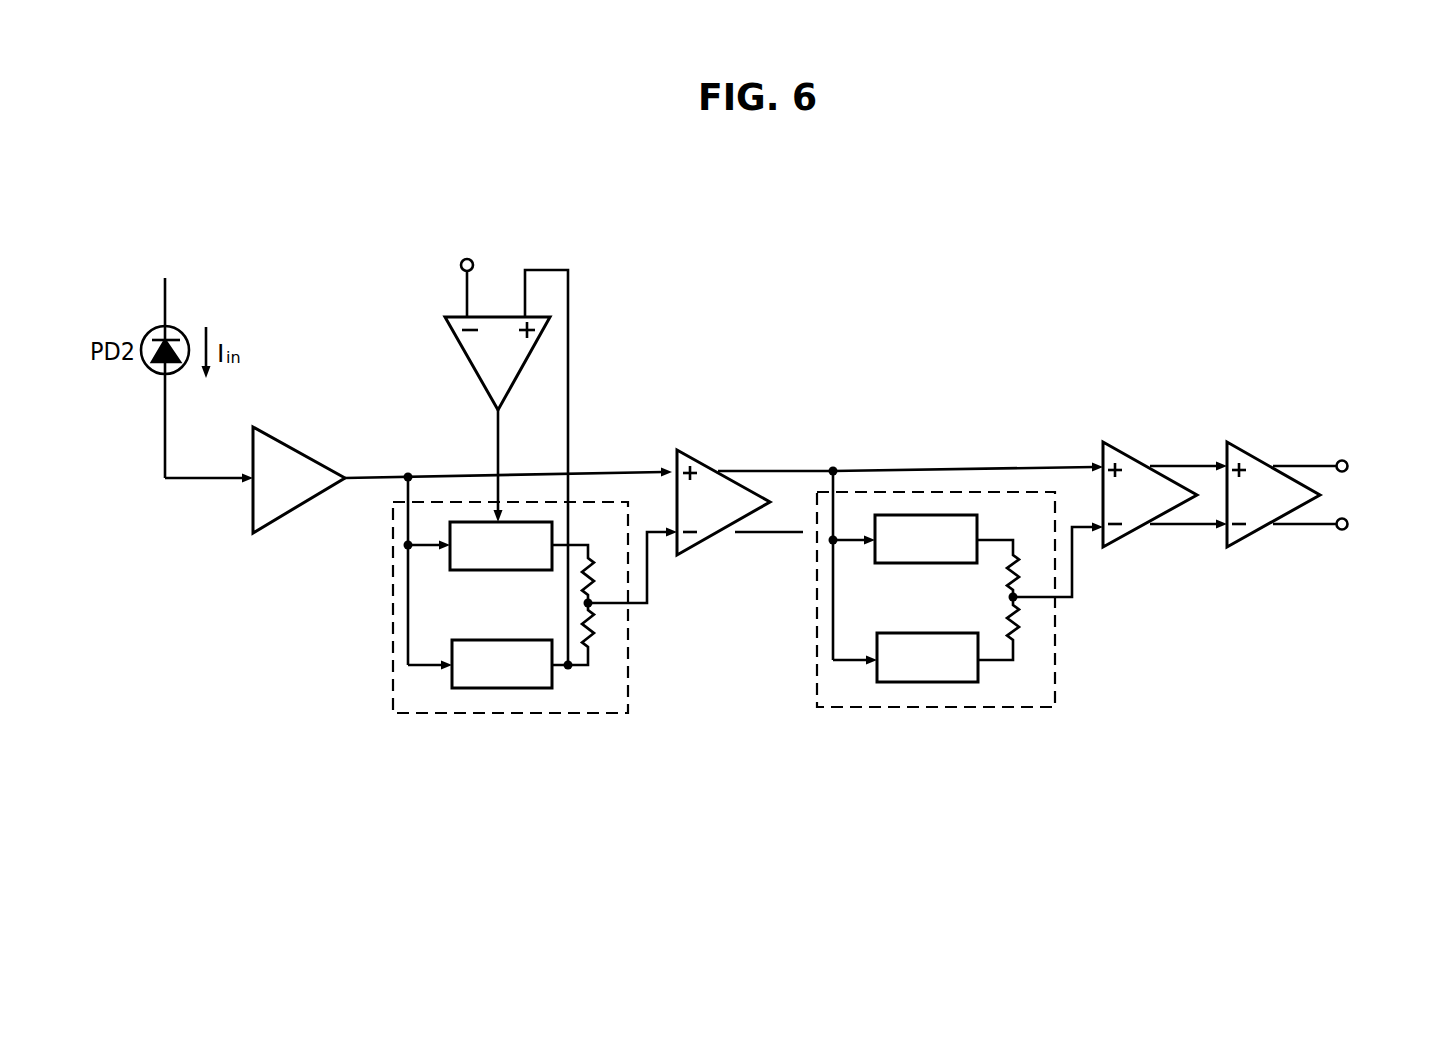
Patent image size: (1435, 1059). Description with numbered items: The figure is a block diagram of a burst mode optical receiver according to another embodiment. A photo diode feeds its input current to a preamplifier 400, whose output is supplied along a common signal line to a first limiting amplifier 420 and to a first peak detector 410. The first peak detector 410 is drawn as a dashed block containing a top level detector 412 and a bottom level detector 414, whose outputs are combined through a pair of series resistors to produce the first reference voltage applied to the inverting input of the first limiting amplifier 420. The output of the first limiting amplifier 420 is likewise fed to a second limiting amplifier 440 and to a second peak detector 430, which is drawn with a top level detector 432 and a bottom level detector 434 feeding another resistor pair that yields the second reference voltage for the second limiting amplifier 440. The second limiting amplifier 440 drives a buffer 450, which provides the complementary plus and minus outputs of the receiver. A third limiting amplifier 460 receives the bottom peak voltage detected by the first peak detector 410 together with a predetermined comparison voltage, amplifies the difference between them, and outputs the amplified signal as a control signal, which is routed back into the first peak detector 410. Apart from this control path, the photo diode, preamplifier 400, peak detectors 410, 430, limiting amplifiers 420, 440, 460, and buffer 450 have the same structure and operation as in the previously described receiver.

The preamplifier 400 is at (283, 440).
The first peak detector 410 is at (555, 628).
The first top level detector T1 412 is at (470, 570).
The first bottom level detector B1 414 is at (525, 640).
The first limiting amplifier 420 is at (710, 462).
The second peak detector 430 is at (981, 632).
The second top level detector T2 432 is at (895, 563).
The second bottom level detector B2 434 is at (952, 633).
The second limiting amplifier 440 is at (1137, 450).
The buffer 450 is at (1262, 450).
The third limiting amplifier 460 is at (468, 363).